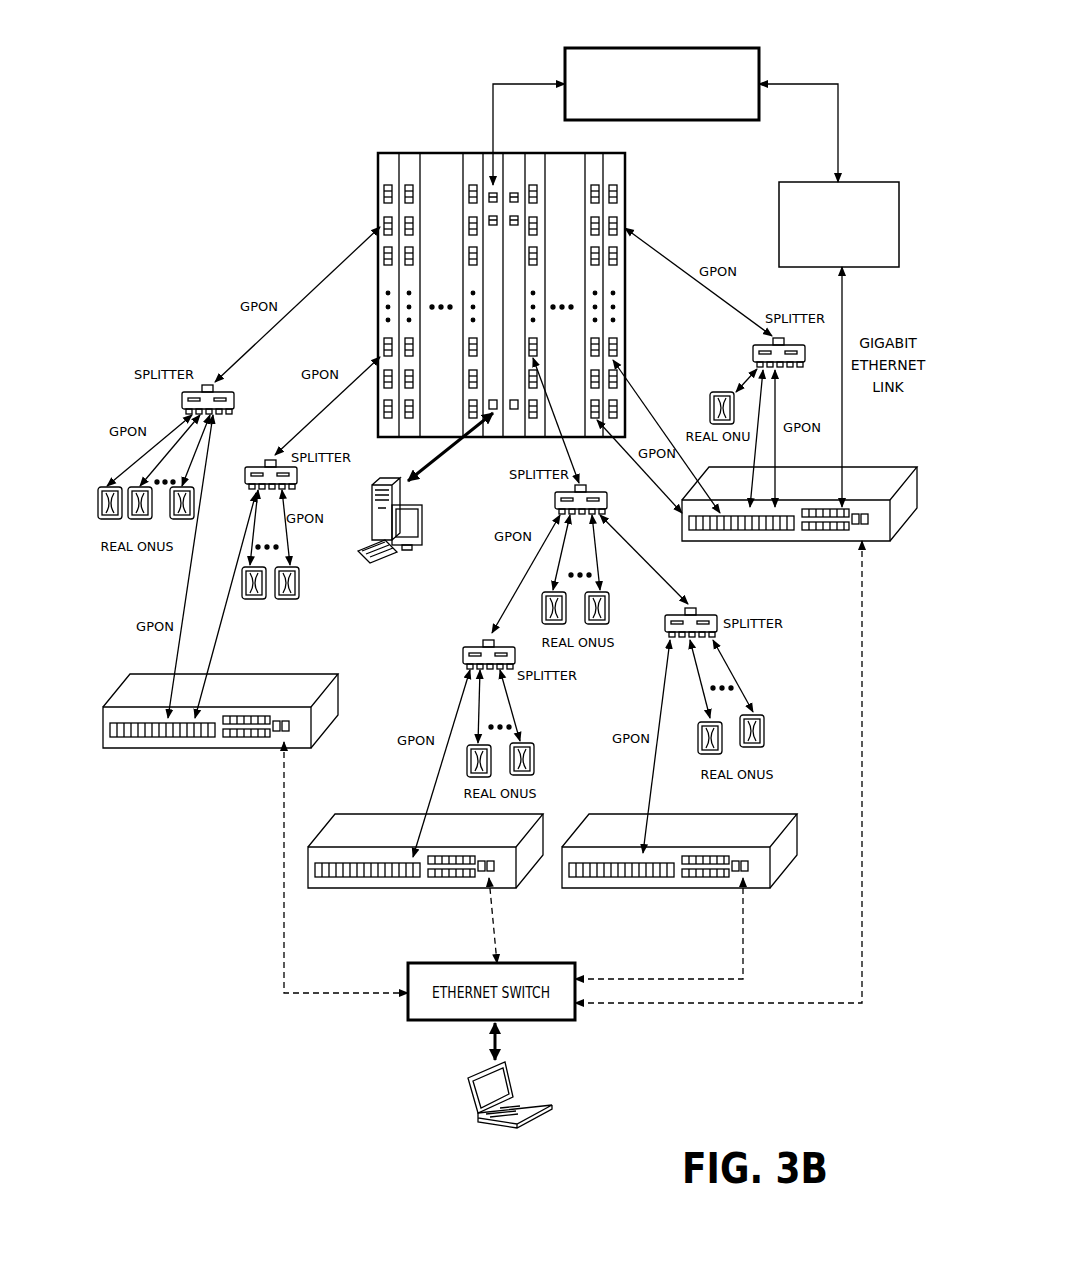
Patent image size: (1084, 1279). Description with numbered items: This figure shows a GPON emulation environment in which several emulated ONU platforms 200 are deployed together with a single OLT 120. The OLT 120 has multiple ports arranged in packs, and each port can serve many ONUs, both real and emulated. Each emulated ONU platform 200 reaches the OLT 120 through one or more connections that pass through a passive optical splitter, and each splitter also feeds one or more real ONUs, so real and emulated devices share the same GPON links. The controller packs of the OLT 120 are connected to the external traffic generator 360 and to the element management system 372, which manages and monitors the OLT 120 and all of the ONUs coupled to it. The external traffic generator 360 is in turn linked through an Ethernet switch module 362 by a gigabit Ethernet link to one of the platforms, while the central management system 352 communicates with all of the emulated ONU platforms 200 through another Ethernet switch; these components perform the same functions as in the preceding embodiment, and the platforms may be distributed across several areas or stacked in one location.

The OLT 120 is at (501, 278).
The external traffic generator 360 is at (748, 52).
The Ethernet switch module 362 is at (839, 224).
The element management system 372 is at (419, 537).
The emulated ONU platform 200 is at (501, 707).
The central management system 352 is at (509, 1114).